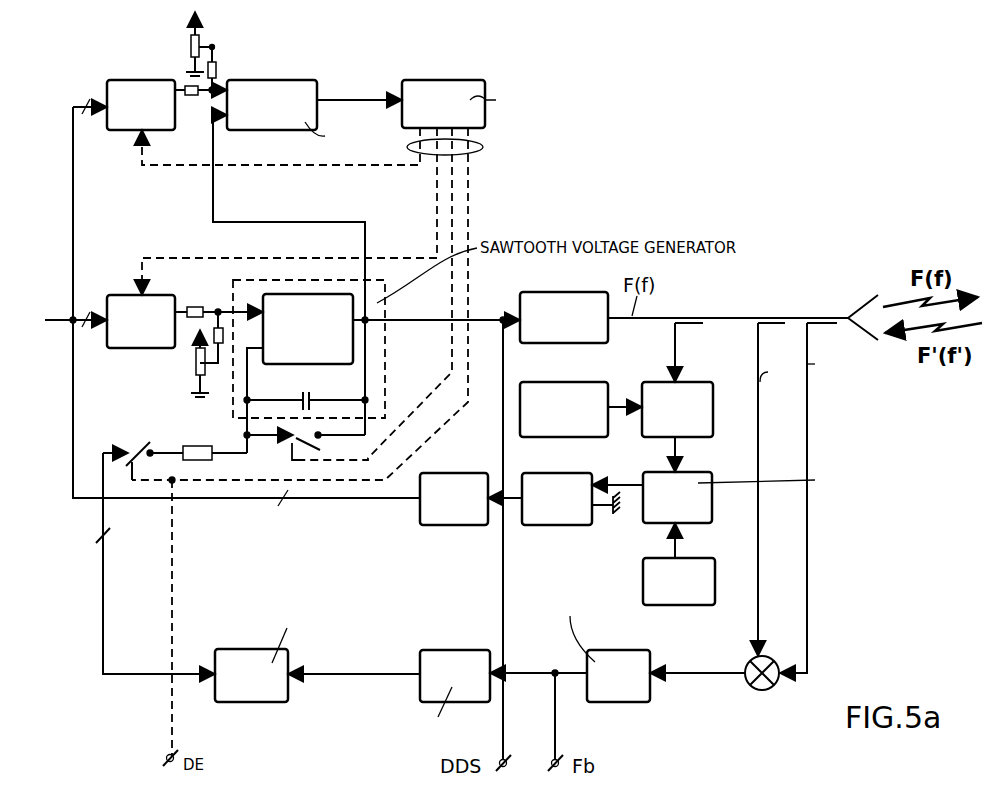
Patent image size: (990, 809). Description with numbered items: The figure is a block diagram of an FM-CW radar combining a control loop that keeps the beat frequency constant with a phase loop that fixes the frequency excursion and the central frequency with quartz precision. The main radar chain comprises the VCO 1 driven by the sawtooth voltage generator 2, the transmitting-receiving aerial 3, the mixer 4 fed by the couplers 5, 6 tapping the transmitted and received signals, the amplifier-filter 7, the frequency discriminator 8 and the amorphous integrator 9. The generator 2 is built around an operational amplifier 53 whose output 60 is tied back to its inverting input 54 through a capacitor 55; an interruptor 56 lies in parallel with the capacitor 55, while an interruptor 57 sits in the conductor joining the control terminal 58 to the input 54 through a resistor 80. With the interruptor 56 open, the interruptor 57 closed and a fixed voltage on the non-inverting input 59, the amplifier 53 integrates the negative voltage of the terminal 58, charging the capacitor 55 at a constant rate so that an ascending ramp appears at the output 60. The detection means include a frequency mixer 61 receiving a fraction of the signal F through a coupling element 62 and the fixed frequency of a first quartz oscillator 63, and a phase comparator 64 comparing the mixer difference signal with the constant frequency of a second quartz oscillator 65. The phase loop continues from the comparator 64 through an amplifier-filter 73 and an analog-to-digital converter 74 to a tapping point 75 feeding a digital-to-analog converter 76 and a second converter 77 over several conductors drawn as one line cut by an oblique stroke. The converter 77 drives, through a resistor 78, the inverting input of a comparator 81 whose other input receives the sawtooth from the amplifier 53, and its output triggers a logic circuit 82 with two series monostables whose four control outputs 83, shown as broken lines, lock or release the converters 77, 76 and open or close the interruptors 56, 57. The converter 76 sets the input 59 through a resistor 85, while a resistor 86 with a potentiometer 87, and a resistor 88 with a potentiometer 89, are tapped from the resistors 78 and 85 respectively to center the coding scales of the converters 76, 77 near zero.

The VCO 1 is at (578, 302).
The sawtooth voltage generator 2 is at (383, 297).
The transmitting-receiving aerial 3 is at (865, 302).
The mixer 4 is at (770, 688).
The coupler 5 is at (768, 320).
The coupler 6 is at (822, 320).
The amplifier-filter 7 is at (608, 665).
The frequency discriminator 8 is at (447, 670).
The amorphous integrator 9 is at (253, 665).
The operational amplifier 53 is at (323, 322).
The inverting input 54 is at (252, 352).
The capacitor 55 is at (312, 397).
The interruptor 56 is at (318, 447).
The interruptor 57 is at (145, 442).
The control terminal 58 is at (104, 536).
The non-inverting input 59 is at (248, 310).
The output 60 is at (368, 322).
The frequency mixer 61 is at (688, 396).
The coupling element 62 is at (690, 322).
The first quartz oscillator 63 is at (568, 400).
The phase comparator 64 is at (698, 503).
The second quartz oscillator 65 is at (683, 592).
The amplifier-filter 73 is at (557, 513).
The analog-to-digital converter 74 is at (455, 510).
The tapping point 75 is at (60, 325).
The digital-to-analog converter 76 is at (130, 340).
The digital-to-analog converter 77 is at (122, 130).
The resistor 78 is at (201, 108).
The resistor 80 is at (197, 446).
The comparator 81 is at (277, 90).
The logic circuit 82 is at (444, 93).
The control outputs 83 is at (483, 149).
The resistor 85 is at (197, 306).
The resistor 86 is at (216, 68).
The potentiometer 87 is at (191, 47).
The resistor 88 is at (228, 337).
The potentiometer 89 is at (196, 362).